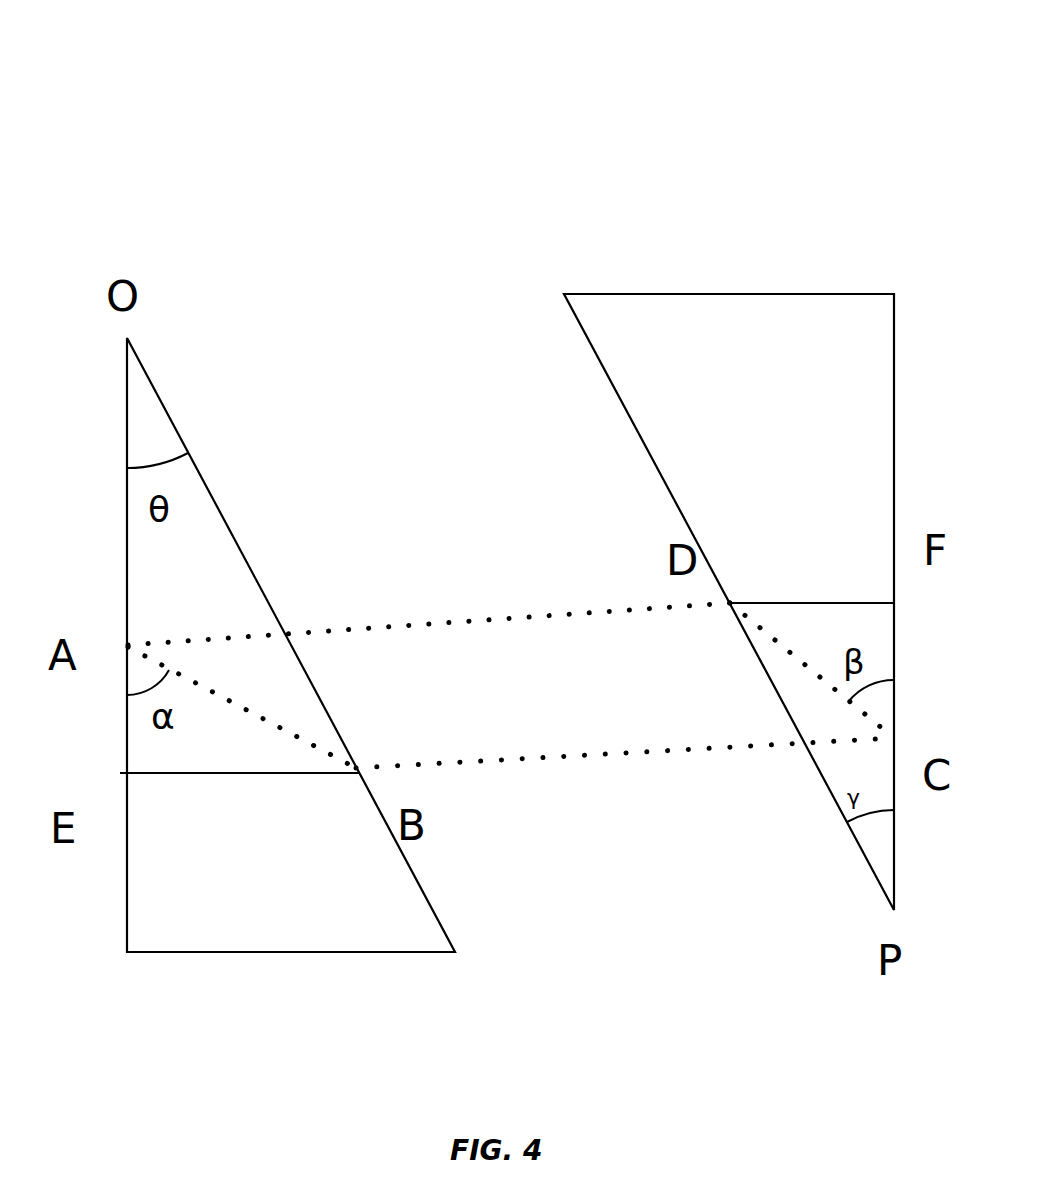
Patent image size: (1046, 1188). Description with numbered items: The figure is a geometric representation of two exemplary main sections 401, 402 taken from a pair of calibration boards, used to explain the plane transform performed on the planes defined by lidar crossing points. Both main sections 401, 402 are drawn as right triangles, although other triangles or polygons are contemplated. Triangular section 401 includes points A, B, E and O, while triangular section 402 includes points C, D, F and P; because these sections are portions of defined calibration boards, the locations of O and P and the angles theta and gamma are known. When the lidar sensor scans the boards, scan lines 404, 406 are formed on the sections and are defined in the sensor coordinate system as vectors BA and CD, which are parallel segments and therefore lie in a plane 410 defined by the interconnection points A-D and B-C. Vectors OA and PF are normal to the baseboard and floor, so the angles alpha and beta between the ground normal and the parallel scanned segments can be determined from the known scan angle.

The main section 401 is at (224, 272).
The main section 402 is at (689, 263).
The scan line 404 is at (237, 706).
The scan line 406 is at (812, 672).
The plane 410 is at (397, 615).